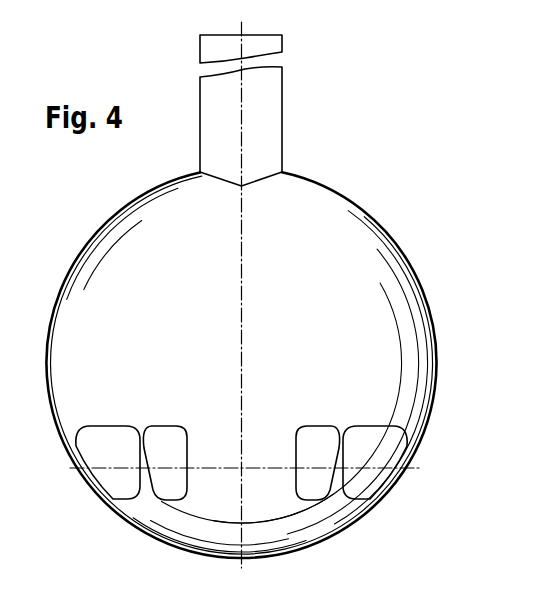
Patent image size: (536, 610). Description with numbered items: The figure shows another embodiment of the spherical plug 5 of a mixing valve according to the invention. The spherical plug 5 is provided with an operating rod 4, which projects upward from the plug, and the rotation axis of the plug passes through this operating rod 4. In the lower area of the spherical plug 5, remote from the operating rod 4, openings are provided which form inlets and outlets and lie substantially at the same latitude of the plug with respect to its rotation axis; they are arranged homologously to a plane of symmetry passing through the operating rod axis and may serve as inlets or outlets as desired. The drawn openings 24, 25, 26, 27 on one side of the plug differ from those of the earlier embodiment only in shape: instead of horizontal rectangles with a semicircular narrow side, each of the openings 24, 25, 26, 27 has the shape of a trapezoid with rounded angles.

The operating rod 4 is at (262, 121).
The spherical plug 5 is at (392, 262).
The opening 24 is at (372, 482).
The opening 25 is at (313, 480).
The opening 26 is at (165, 485).
The opening 27 is at (110, 480).